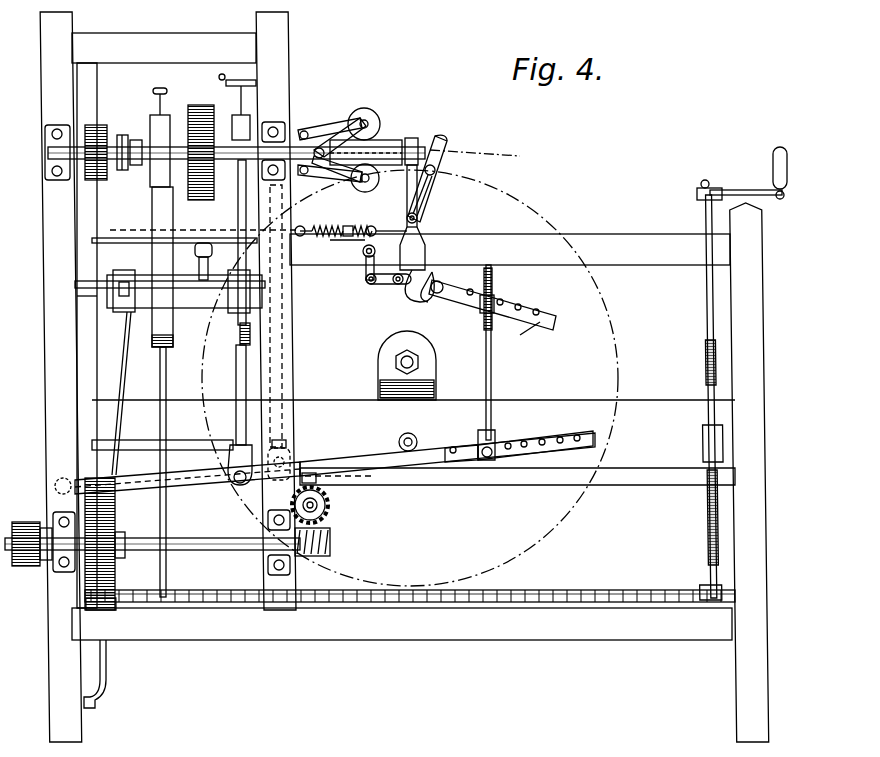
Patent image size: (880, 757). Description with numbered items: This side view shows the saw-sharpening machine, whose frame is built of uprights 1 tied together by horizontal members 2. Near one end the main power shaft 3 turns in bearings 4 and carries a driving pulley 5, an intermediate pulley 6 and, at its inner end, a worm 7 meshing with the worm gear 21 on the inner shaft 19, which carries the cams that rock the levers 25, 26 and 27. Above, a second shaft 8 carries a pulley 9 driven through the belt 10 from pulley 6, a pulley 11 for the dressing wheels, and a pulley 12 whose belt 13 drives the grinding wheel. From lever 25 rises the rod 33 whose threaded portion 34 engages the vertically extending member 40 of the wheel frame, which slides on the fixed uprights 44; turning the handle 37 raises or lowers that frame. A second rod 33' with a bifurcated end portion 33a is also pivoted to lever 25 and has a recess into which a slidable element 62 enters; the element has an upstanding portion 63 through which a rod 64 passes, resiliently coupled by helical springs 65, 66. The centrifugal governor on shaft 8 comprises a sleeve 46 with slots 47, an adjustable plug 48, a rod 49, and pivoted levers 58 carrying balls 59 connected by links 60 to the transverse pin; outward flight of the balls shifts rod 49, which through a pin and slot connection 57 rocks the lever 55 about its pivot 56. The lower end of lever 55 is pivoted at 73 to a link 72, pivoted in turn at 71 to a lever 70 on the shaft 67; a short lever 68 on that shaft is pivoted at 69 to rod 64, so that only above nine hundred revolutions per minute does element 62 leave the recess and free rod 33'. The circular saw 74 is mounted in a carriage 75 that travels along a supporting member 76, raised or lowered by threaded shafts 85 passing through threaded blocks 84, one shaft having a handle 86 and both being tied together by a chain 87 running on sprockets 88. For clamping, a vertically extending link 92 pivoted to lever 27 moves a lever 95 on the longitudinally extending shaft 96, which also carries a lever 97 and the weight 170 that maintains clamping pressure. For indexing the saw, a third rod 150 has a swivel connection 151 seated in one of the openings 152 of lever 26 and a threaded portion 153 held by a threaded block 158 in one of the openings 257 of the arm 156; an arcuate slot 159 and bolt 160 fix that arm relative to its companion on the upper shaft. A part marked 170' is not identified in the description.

The uprights 1 is at (732, 660).
The horizontal members 2 is at (510, 249).
The shaft 3 is at (222, 544).
The bearings 4 is at (171, 547).
The driving pulley 5 is at (266, 362).
The pulley 6 is at (114, 526).
The worm 7 is at (318, 556).
The shaft 8 is at (138, 165).
The pulley 9 is at (102, 178).
The belt 10 is at (92, 211).
The pulley 11 is at (122, 135).
The pulley 12 is at (178, 115).
The belt 13 is at (203, 105).
The inner shaft 19 is at (276, 311).
The worm gear 21 is at (330, 505).
The lever 25 is at (679, 485).
The lever 26 is at (396, 450).
The longitudinally extending lever 27 is at (198, 476).
The rod 33 is at (226, 262).
The rod 33' is at (295, 316).
The bifurcated end portion 33a is at (285, 444).
The threaded portion 34 is at (240, 338).
The handle 37 is at (236, 88).
The vertically extending member 40 is at (160, 211).
The fixed uprights 44 is at (160, 380).
The sleeve 46 is at (386, 134).
The slots 47 is at (366, 153).
The adjustable plug 48 is at (411, 138).
The rod 49 is at (441, 140).
The lever 55 is at (425, 195).
The pivot point 56 is at (417, 218).
The pin and slot connection 57 is at (416, 146).
The levers 58 is at (322, 126).
The weight or ball 59 is at (365, 108).
The links 60 is at (352, 130).
The slidable element 62 is at (300, 236).
The upstanding portion 63 is at (335, 226).
The rod 64 is at (352, 240).
The helical spring 65 is at (310, 236).
The helical spring 66 is at (365, 226).
The shaft 67 is at (375, 251).
The short lever 68 is at (391, 227).
The pivotal engagement 69 is at (375, 228).
The lever 70 is at (366, 272).
The pivotal engagement 71 is at (371, 284).
The link 72 is at (398, 284).
The pivotal engagement 73 is at (414, 300).
The circular saw 74 is at (558, 198).
The carriage 75 is at (436, 372).
The supporting member 76 is at (658, 400).
The threaded blocks 84 is at (697, 442).
The threaded shafts 85 is at (704, 318).
The handle 86 is at (726, 190).
The chain 87 is at (560, 590).
The sprockets 88 is at (706, 600).
The vertically extending link 92 is at (236, 383).
The lever 95 is at (230, 300).
The longitudinally extending shaft 96 is at (80, 296).
The lever 97 is at (195, 255).
The third rod 150 is at (491, 376).
The swivel connection 151 is at (492, 436).
The openings 152 is at (453, 447).
The threaded portion 153 is at (492, 270).
The arm 156 is at (552, 320).
The threaded block 158 is at (494, 300).
The arcuate slot 159 is at (430, 303).
The bolt 160 is at (443, 286).
The weight 170 is at (170, 301).
The rod 170' is at (135, 393).
The openings 257 is at (525, 333).